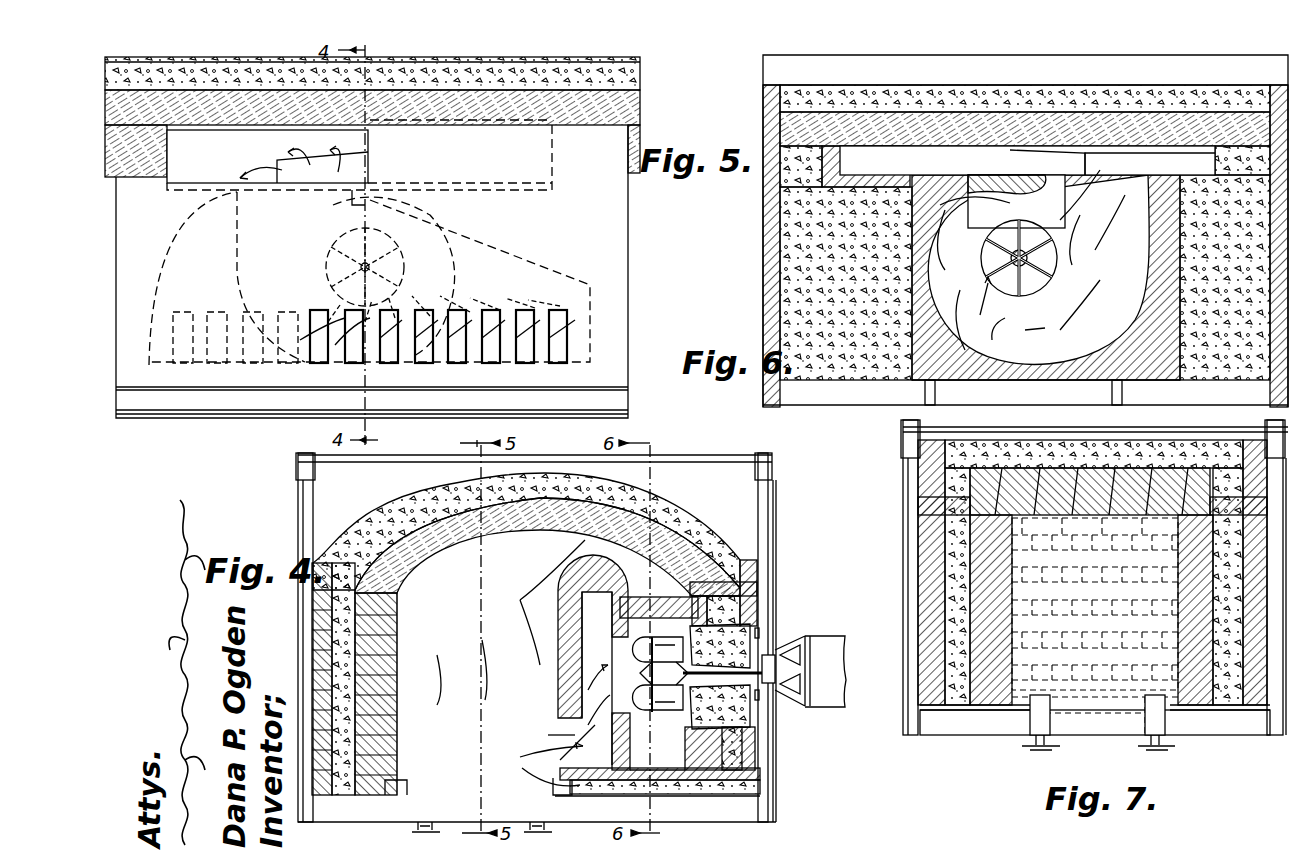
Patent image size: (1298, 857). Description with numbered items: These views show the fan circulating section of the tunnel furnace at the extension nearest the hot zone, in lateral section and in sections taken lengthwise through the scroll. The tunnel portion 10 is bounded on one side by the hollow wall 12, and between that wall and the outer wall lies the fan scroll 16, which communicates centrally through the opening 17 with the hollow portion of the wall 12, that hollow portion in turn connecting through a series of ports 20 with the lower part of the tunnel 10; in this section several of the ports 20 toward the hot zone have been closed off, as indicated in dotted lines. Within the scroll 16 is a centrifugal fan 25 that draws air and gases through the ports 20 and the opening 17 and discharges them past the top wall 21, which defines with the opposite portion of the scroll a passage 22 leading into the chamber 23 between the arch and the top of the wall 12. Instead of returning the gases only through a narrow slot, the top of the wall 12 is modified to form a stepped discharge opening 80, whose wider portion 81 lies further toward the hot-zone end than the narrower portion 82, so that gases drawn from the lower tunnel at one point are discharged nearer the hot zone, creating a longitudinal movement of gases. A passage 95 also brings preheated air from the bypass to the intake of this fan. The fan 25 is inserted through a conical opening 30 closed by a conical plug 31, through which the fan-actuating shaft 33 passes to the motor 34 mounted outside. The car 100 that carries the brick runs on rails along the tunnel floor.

In FIG. 4, the tunnel portion 10 is at (496, 667).
In FIG. 4, the hollow wall 12 is at (566, 672).
In FIG. 6, the fan scroll 16 is at (1046, 277).
In FIG. 4, the fan scroll 16 is at (673, 757).
In FIG. 6, the opening 17 is at (974, 304).
In FIG. 4, the opening 17 is at (620, 646).
In FIG. 5, the ports 20 is at (320, 355).
In FIG. 4, the ports 20 is at (551, 743).
In FIG. 6, the top wall 21 is at (1026, 172).
In FIG. 6, the passage 22 is at (1150, 164).
In FIG. 6, the chamber 23 is at (1027, 187).
In FIG. 4, the chamber 23 is at (672, 553).
In FIG. 6, the centrifugal fan 25 is at (1030, 292).
In FIG. 4, the centrifugal fan 25 is at (668, 712).
In FIG. 4, the conical opening 30 is at (755, 606).
In FIG. 4, the conical plug 31 is at (742, 630).
In FIG. 4, the fan-actuating shaft 33 is at (764, 684).
In FIG. 4, the motor 34 is at (830, 663).
In FIG. 5, the stepped discharge opening 80 is at (359, 155).
In FIG. 5, the wider portion 81 is at (302, 170).
In FIG. 5, the narrower portion 82 is at (318, 151).
In FIG. 4, the passage 95 is at (593, 636).
In FIG. 7, the car 100 is at (1046, 690).